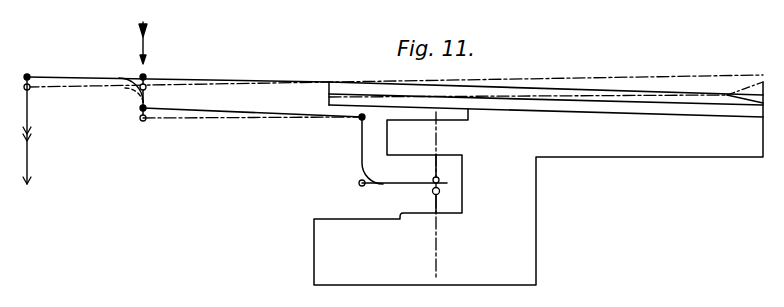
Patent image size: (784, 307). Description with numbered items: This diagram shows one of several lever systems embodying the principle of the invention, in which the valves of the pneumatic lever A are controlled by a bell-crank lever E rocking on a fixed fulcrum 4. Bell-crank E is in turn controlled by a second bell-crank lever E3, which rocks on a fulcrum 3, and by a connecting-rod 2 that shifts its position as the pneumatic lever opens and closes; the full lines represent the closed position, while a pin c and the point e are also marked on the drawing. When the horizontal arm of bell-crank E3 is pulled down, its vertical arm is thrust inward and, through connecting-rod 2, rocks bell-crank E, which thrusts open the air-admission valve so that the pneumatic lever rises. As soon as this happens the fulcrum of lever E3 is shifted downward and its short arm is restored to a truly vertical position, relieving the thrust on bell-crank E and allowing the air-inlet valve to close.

The pneumatic lever A is at (364, 82).
The second bell-crank lever E3 is at (88, 79).
The fulcrum 3 is at (145, 77).
The rod e is at (30, 130).
The connecting-rod 2 is at (243, 113).
The fixed fulcrum 4 is at (361, 185).
The bell-crank lever E is at (404, 175).
The pin c is at (440, 184).